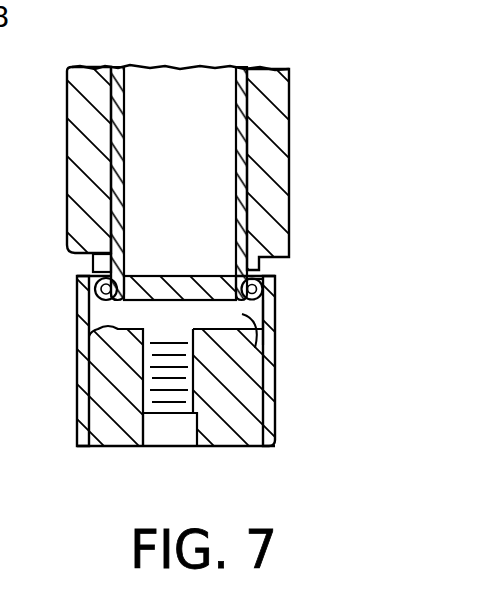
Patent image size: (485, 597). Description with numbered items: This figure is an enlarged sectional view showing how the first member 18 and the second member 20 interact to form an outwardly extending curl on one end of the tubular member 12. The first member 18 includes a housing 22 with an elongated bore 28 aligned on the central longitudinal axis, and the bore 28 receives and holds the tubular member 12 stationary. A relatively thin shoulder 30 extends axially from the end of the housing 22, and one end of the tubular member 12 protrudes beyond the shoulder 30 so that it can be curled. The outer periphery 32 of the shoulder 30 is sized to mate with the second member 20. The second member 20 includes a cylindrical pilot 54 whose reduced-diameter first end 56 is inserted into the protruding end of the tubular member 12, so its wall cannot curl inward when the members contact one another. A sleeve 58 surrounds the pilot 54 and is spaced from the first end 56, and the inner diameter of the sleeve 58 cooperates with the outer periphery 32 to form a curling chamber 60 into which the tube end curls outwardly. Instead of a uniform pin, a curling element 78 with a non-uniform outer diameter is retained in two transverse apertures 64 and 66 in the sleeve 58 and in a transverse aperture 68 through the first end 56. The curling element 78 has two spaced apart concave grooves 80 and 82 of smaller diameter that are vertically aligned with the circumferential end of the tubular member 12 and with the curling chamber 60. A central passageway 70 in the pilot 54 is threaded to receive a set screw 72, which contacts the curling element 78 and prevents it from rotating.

The tubular member 12 is at (122, 88).
The first member 18 is at (340, 47).
The second member 20 is at (336, 403).
The housing 22 is at (289, 92).
The bore 28 is at (247, 100).
The shoulder 30 is at (118, 249).
The outer periphery 32 is at (93, 263).
The pilot 54 is at (245, 428).
The first end 56 is at (180, 276).
The sleeve 58 is at (278, 413).
The curling chamber 60 is at (278, 289).
The aperture 64 is at (278, 330).
The aperture 66 is at (77, 323).
The aperture 68 is at (92, 347).
The central passageway 70 is at (153, 444).
The set screw 72 is at (182, 440).
The curling element 78 is at (278, 308).
The groove 80 is at (108, 317).
The groove 82 is at (257, 342).